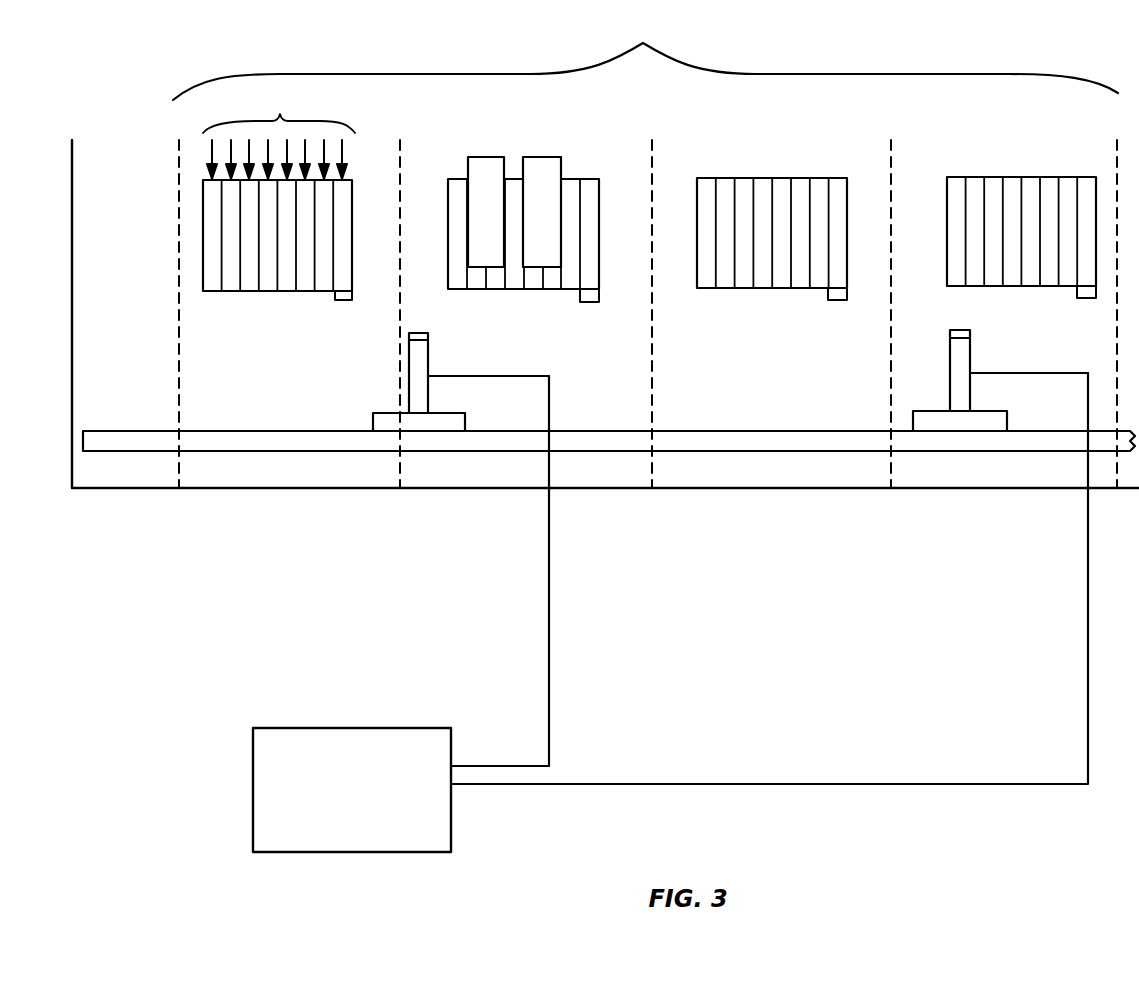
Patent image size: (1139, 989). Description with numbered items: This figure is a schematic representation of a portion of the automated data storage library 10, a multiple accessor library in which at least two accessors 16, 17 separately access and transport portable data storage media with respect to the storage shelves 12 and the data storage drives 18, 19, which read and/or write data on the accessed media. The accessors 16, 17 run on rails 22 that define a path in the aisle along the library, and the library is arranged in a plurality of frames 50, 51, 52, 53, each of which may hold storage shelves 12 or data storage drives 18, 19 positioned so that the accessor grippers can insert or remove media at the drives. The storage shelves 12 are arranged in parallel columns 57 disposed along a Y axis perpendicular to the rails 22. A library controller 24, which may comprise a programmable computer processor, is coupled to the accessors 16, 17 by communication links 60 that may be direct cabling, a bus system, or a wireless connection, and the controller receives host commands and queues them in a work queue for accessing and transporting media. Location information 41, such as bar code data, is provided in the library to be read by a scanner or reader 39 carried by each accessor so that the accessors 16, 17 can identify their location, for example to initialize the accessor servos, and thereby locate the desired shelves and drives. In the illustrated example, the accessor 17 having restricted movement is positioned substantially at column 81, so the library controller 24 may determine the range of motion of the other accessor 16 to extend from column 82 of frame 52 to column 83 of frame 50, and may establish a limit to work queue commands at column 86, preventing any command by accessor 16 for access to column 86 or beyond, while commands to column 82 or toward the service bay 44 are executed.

The automated data storage library 10 is at (645, 55).
The storage shelves 12 is at (614, 235).
The accessor 16 is at (409, 390).
The accessor 17 is at (950, 385).
The data storage drive 18 is at (488, 157).
The data storage drive 19 is at (542, 157).
The rails 22 is at (245, 455).
The library controller 24 is at (318, 728).
The scanner or reader 39 is at (415, 333).
The location information 41 is at (343, 300).
The service bay 44 is at (101, 490).
The frame 50 is at (340, 490).
The frame 51 is at (483, 490).
The frame 52 is at (773, 490).
The frame 53 is at (988, 490).
The parallel columns 57 is at (279, 137).
The communication links 60 is at (550, 712).
The column 81 is at (960, 177).
The column 82 is at (813, 202).
The column 83 is at (212, 292).
The column 86 is at (840, 178).